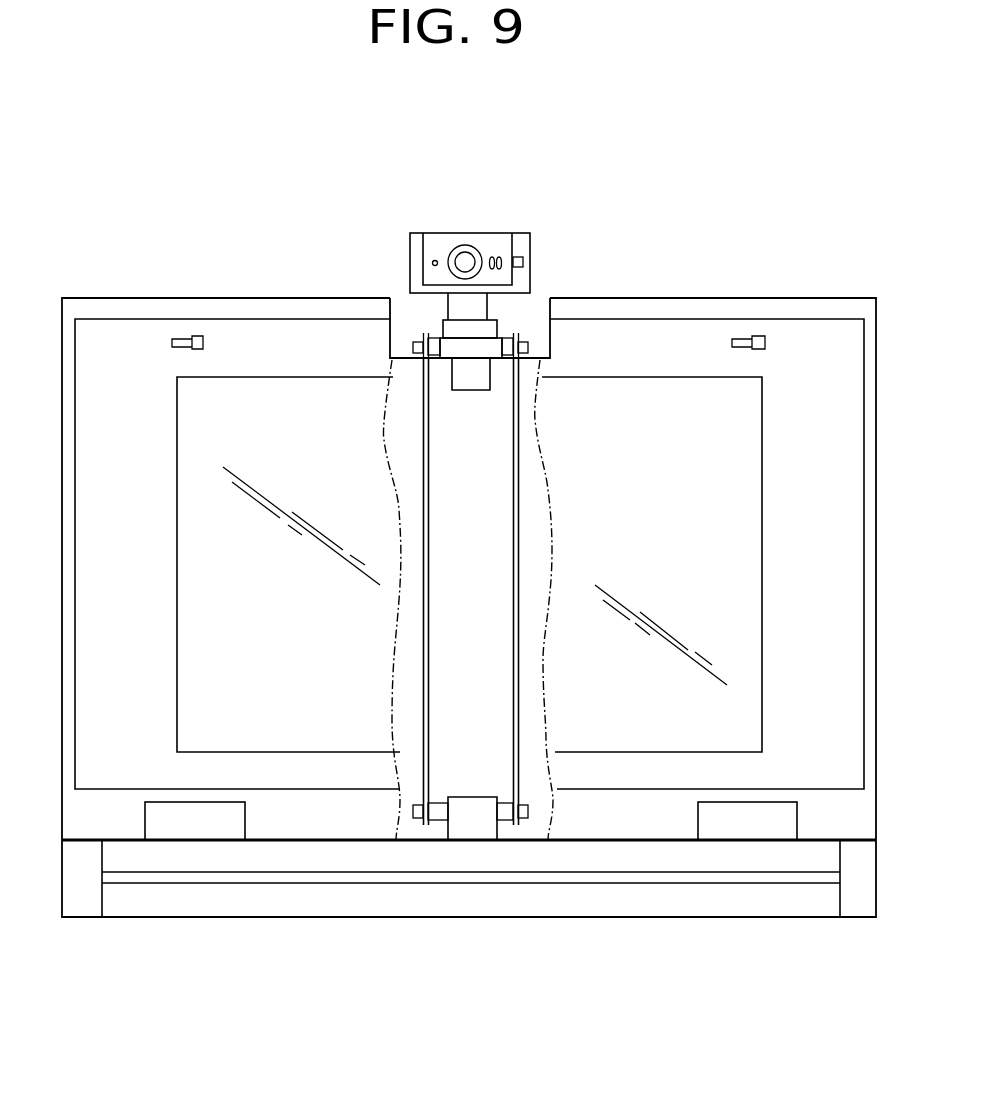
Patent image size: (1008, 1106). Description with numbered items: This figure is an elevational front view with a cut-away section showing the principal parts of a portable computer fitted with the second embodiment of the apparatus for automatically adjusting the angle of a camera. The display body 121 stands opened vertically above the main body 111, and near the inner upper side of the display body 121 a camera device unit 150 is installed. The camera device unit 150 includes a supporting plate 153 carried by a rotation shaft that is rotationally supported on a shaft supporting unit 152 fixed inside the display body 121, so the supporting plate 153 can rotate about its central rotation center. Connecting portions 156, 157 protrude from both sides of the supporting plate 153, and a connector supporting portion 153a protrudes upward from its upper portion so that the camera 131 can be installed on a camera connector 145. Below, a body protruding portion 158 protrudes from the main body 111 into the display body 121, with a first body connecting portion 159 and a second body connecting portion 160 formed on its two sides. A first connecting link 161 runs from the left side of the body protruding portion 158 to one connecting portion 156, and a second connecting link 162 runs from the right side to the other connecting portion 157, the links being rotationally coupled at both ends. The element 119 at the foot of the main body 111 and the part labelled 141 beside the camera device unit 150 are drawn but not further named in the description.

The main body 111 is at (234, 917).
The support foot 119 is at (745, 827).
The display body 121 is at (130, 298).
The camera 131 is at (495, 233).
The cover panel 141 is at (535, 318).
The camera connector 145 is at (488, 310).
The camera device unit 150 is at (422, 318).
The shaft supporting unit 152 is at (468, 391).
The supporting plate 153 is at (448, 341).
The connector supporting portion 153a is at (465, 328).
The connecting portion 156 is at (425, 340).
The connecting portion 157 is at (499, 338).
The body protruding portion 158 is at (473, 828).
The first body connecting portion 159 is at (440, 813).
The second body connecting portion 160 is at (508, 813).
The first connecting link 161 is at (425, 495).
The second connecting link 162 is at (518, 495).